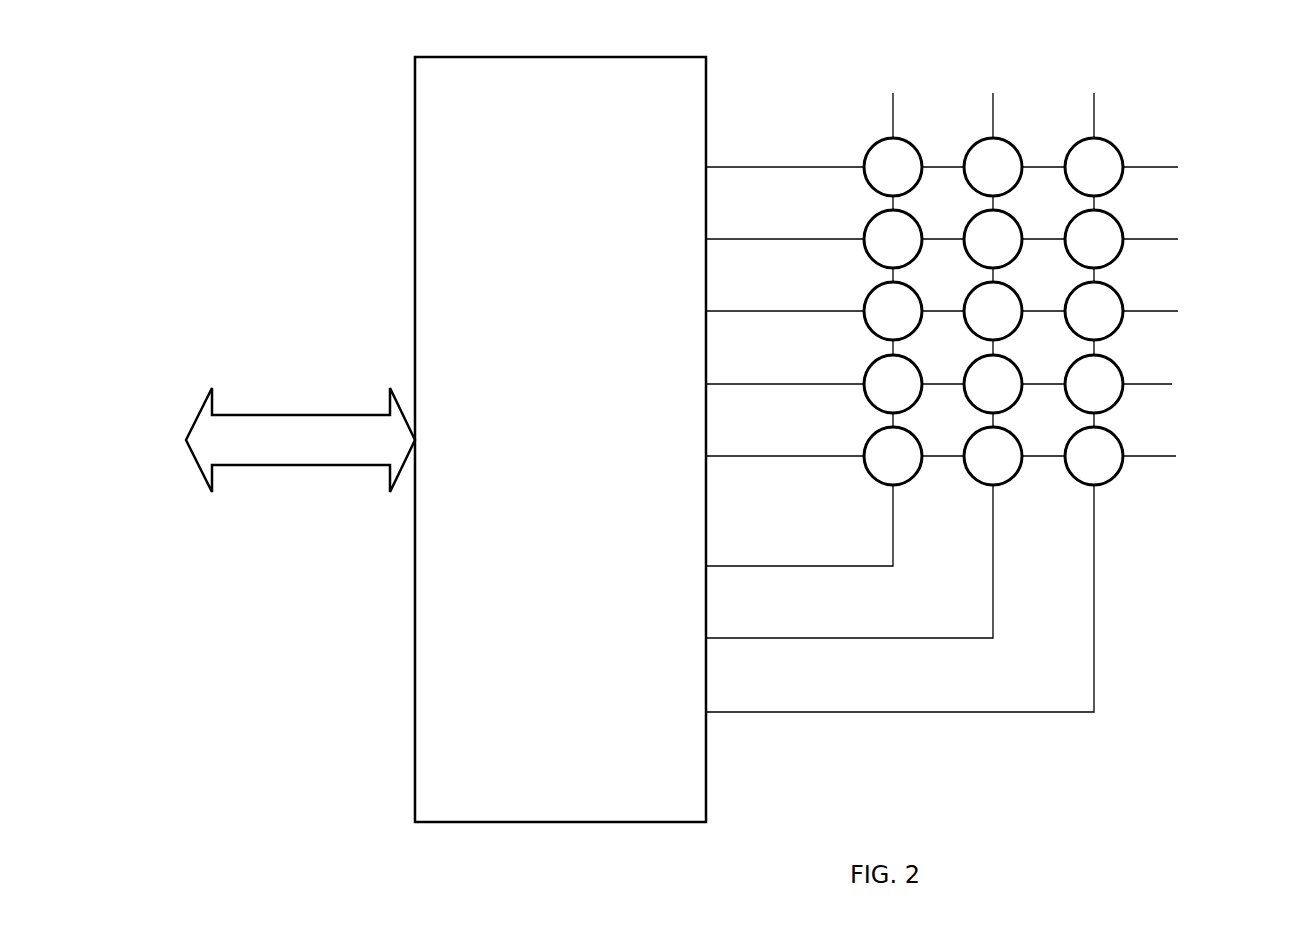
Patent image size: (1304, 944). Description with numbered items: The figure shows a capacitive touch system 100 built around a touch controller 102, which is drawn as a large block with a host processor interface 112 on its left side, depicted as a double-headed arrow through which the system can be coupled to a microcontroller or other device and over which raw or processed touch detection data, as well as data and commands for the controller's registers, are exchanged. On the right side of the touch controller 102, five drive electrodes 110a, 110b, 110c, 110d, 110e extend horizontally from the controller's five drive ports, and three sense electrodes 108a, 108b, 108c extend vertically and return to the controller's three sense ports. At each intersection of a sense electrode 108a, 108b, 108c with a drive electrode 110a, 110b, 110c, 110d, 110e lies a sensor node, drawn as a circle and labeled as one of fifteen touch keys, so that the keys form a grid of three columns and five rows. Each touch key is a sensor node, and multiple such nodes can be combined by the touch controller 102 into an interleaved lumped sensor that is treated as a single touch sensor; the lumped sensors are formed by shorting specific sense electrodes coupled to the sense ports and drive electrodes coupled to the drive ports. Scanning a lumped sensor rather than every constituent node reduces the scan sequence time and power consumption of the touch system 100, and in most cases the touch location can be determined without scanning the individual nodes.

The capacitive touch system 100 is at (775, 26).
The touch controller 102 is at (694, 816).
The sense electrode 108a is at (875, 566).
The sense electrode 108b is at (950, 638).
The sense electrode 108c is at (991, 712).
The drive electrode 110a is at (1178, 167).
The drive electrode 110b is at (1178, 239).
The drive electrode 110c is at (1178, 311).
The drive electrode 110d is at (1172, 384).
The drive electrode 110e is at (1176, 456).
The interface 112 is at (287, 465).